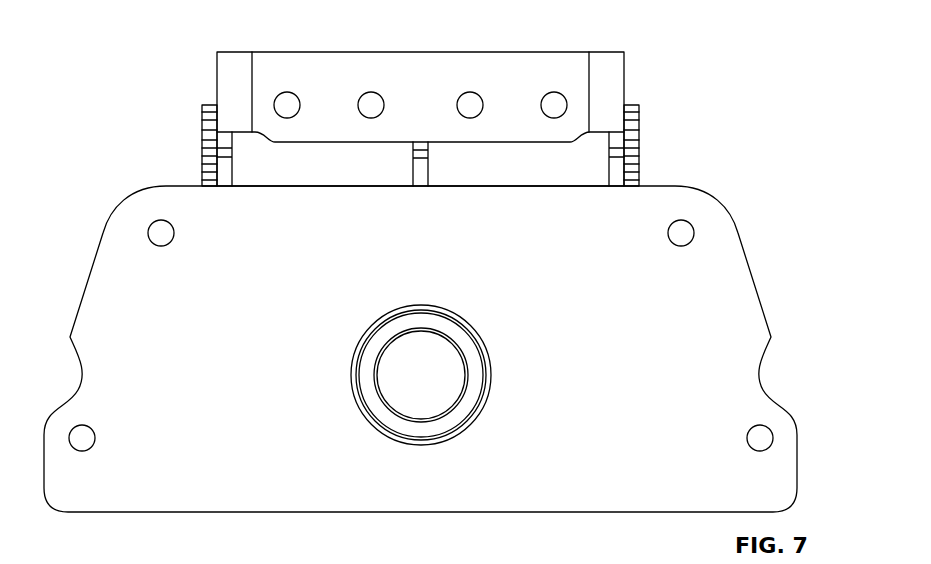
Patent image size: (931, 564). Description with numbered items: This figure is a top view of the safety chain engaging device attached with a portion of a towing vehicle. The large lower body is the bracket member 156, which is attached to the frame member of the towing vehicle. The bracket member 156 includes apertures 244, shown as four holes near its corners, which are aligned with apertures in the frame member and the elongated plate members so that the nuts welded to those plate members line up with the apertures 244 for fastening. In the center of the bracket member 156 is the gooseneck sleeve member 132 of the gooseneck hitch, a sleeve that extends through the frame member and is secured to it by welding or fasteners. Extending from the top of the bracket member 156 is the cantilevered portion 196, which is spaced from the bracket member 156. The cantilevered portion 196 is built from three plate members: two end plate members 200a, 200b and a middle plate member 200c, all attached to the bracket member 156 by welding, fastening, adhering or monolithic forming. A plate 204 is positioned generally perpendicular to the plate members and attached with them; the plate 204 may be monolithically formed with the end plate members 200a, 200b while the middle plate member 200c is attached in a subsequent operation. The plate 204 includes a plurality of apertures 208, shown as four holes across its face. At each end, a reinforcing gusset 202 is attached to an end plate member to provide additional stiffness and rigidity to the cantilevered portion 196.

The gooseneck sleeve member 132 is at (367, 366).
The bracket member 156 is at (717, 297).
The cantilevered portion 196 is at (643, 55).
The end plate member 200a is at (227, 174).
The end plate member 200b is at (617, 174).
The middle plate member 200c is at (421, 172).
The reinforcing gusset 202 is at (208, 152).
The plate 204 is at (577, 63).
The apertures 208 is at (287, 98).
The apertures 244 is at (158, 228).